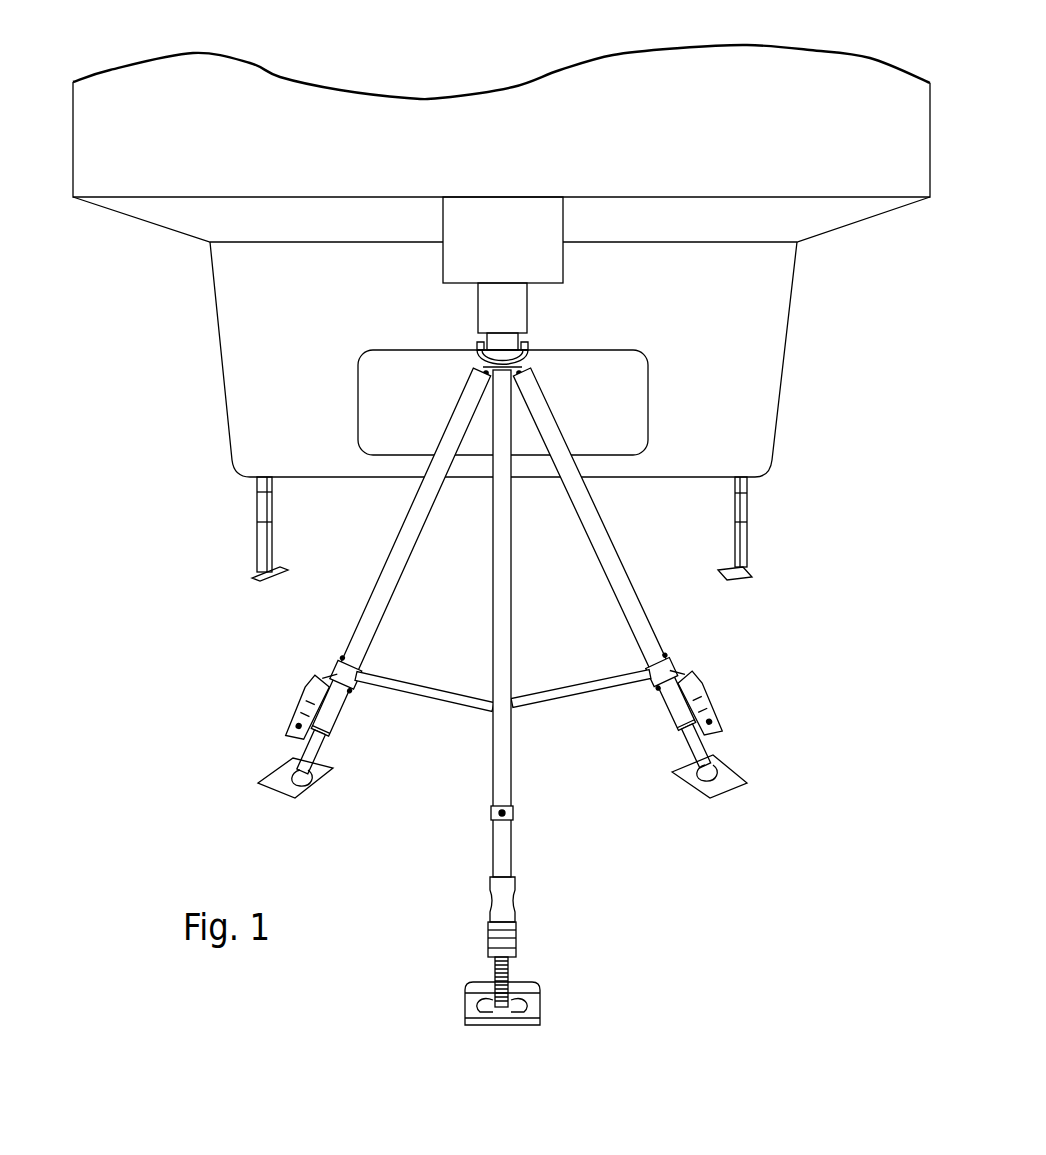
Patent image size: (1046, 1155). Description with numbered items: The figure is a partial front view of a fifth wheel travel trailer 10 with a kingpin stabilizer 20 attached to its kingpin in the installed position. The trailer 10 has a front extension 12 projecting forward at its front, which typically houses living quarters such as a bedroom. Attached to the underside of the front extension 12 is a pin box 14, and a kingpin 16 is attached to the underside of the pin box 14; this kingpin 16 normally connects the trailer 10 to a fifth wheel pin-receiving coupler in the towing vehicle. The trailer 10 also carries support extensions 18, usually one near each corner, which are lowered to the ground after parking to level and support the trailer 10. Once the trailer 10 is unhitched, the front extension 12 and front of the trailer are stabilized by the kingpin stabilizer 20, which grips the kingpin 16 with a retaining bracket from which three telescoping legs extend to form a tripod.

The fifth wheel travel trailer 10 is at (765, 345).
The front extension 12 is at (183, 182).
The pin box 14 is at (547, 260).
The kingpin 16 is at (522, 322).
The support extensions 18 is at (258, 530).
The kingpin stabilizer 20 is at (417, 538).